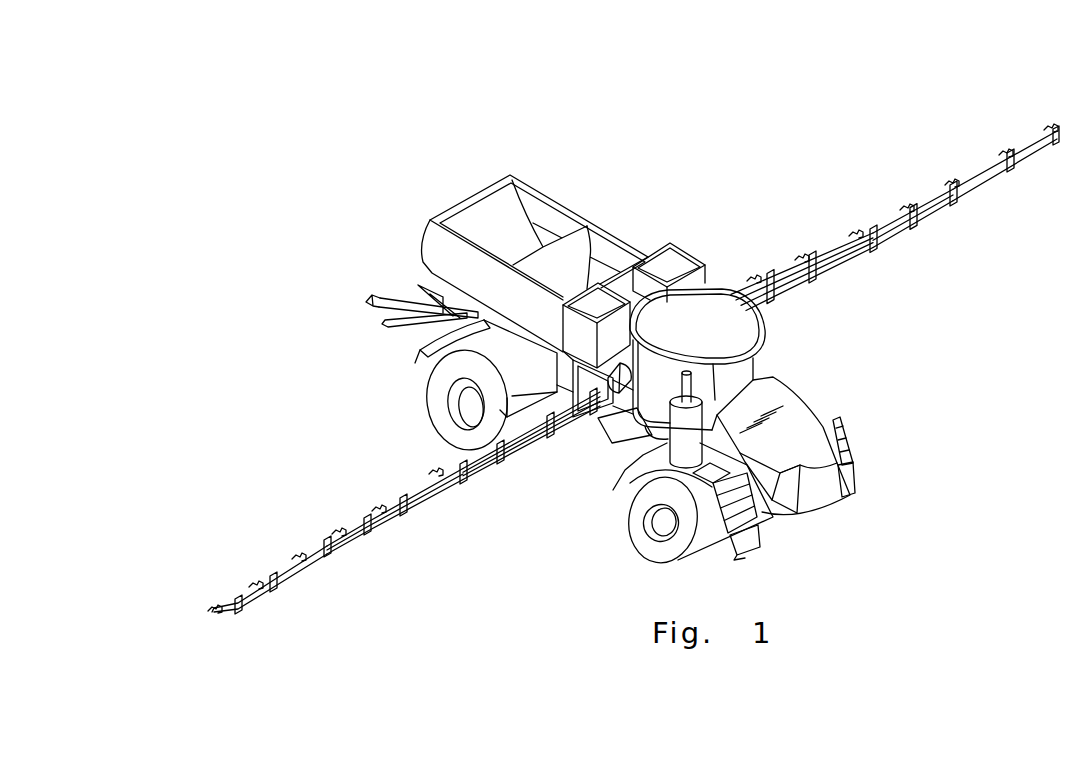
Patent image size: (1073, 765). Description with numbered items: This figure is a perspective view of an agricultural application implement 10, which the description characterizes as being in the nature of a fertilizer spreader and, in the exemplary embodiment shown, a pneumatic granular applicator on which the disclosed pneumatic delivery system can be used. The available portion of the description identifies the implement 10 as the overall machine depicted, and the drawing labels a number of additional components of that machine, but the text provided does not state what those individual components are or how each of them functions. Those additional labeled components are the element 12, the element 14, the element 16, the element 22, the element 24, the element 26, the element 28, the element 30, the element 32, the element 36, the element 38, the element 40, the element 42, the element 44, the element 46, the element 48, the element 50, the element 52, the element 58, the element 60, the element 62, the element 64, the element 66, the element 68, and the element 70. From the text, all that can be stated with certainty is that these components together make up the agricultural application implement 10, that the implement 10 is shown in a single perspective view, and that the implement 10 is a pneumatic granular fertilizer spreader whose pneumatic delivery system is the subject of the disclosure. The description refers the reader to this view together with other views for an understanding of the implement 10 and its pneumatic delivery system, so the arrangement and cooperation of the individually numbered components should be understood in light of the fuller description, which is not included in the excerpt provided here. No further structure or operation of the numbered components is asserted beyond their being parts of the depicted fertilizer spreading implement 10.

The agricultural application implement 10 is at (401, 179).
The vehicle 12 is at (603, 449).
The first boom section 14 is at (456, 521).
The second boom section 16 is at (930, 249).
The nozzle 22 is at (433, 468).
The nozzle 24 is at (377, 504).
The nozzle 26 is at (337, 527).
The nozzle 28 is at (297, 552).
The nozzle 30 is at (255, 580).
The nozzle 32 is at (214, 604).
The nozzle 36 is at (755, 271).
The nozzle 38 is at (803, 250).
The nozzle 40 is at (857, 226).
The nozzle 42 is at (908, 200).
The nozzle 44 is at (953, 175).
The nozzle 46 is at (1007, 145).
The nozzle 48 is at (1052, 120).
The hitch 50 is at (368, 303).
The hitch frame 52 is at (420, 285).
The hood 58 is at (808, 440).
The cab 60 is at (752, 364).
The hopper 62 is at (445, 245).
The first compartment 64 is at (501, 245).
The second compartment 66 is at (561, 285).
The control box 68 is at (587, 312).
The control box 70 is at (656, 272).